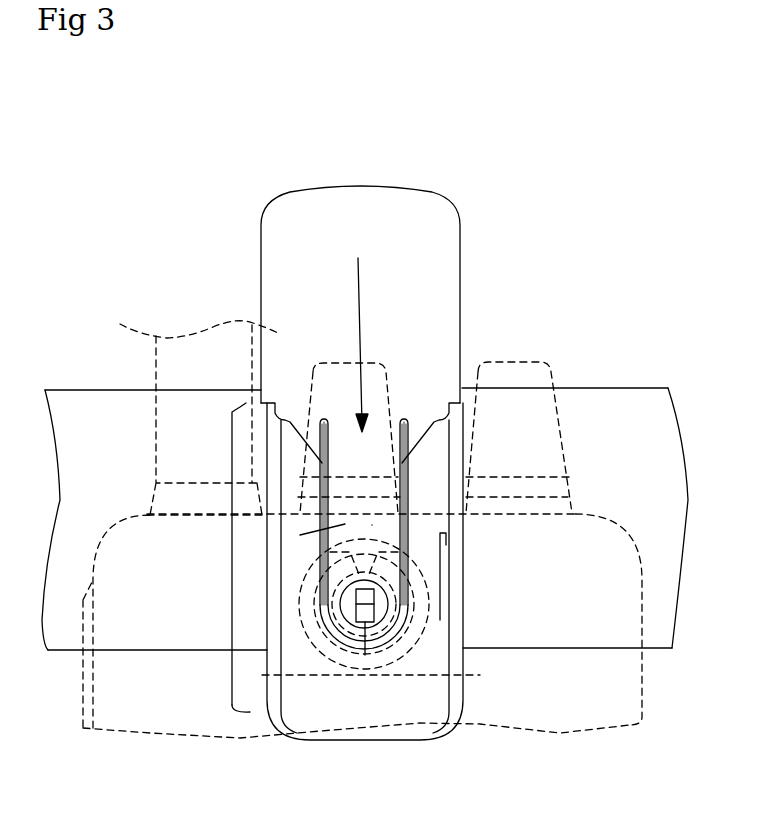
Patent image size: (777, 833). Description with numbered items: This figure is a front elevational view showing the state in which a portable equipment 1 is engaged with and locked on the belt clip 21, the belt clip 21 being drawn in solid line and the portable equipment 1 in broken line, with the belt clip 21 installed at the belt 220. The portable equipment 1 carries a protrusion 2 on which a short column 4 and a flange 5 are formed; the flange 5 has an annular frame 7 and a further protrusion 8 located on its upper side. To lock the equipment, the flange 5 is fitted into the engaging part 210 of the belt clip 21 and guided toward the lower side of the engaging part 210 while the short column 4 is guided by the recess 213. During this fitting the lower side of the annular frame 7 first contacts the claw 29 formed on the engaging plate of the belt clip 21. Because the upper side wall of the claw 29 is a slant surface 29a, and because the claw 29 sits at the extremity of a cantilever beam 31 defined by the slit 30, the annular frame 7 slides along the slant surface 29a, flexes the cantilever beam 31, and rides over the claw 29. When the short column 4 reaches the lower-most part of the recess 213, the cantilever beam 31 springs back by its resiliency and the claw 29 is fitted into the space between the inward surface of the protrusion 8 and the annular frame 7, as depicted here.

The portable equipment 1 is at (538, 688).
The protrusion 2 is at (450, 612).
The short column 4 is at (345, 655).
The flange 5 is at (412, 655).
The annular frame 7 is at (392, 663).
The protrusion 8 is at (365, 562).
The belt clip 21 is at (462, 250).
The claw 29 is at (365, 625).
The slant surface 29a is at (378, 600).
The slit 30 is at (401, 427).
The cantilever beam 31 is at (372, 525).
The engaging part 210 is at (232, 453).
The recess 213 is at (350, 522).
The belt 220 is at (600, 410).